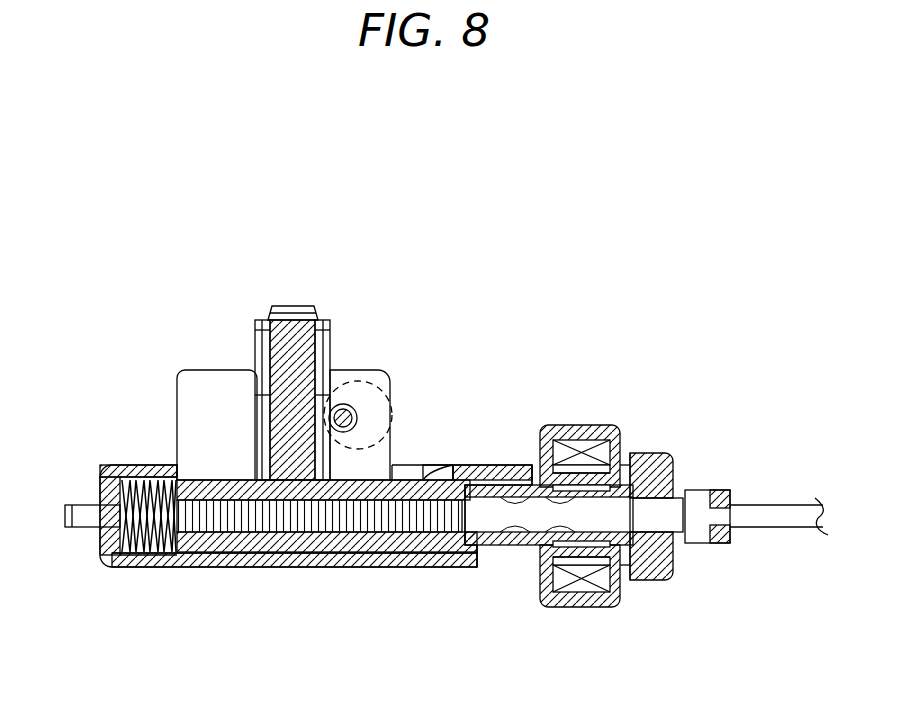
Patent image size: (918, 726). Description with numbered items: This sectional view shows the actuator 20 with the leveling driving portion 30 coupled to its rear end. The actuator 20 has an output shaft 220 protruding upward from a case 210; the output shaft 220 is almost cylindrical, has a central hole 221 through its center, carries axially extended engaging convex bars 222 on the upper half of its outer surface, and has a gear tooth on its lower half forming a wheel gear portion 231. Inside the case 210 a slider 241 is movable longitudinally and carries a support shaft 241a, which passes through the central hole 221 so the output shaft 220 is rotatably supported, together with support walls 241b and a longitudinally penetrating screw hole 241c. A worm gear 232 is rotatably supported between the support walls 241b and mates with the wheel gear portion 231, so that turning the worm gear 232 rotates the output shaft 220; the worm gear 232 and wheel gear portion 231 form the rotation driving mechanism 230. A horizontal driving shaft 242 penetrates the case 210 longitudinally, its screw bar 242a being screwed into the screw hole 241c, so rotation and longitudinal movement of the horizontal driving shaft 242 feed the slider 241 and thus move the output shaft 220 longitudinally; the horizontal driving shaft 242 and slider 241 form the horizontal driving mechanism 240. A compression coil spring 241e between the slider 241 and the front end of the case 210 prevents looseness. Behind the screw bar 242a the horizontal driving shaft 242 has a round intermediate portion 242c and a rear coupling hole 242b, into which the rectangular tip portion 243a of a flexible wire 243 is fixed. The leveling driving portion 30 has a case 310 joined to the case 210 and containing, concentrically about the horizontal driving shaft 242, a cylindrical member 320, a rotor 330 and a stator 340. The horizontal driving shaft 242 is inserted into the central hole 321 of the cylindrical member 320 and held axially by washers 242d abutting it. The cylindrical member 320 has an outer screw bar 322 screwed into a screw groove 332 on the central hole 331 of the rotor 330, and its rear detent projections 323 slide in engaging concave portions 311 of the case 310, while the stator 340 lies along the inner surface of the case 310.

The actuator 20 is at (150, 333).
The leveling driving portion 30 is at (567, 425).
The case 210 is at (137, 567).
The output shaft 220 is at (327, 335).
The central hole 221 is at (282, 330).
The engaging convex bars 222 is at (250, 330).
The rotation driving mechanism 230 is at (465, 210).
The wheel gear portion 231 is at (347, 405).
The worm gear 232 is at (362, 445).
The horizontal driving mechanism 240 is at (415, 673).
The slider 241 is at (312, 567).
The support shaft 241a is at (305, 306).
The support walls 241b is at (195, 420).
The screw hole 241c is at (238, 567).
The compression coil spring 241e is at (125, 465).
The horizontal driving shaft 242 is at (400, 567).
The screw bar 242a is at (262, 567).
The coupling hole 242b is at (740, 545).
The intermediate portion 242c is at (475, 567).
The washers 242d is at (440, 470).
The flexible wire 243 is at (775, 505).
The tip portion 243a is at (700, 545).
The case 310 is at (590, 425).
The engaging concave portions 311 is at (655, 465).
The cylindrical member 320 is at (550, 603).
The central hole 321 is at (473, 468).
The screw bar 322 is at (600, 607).
The detent projections 323 is at (640, 455).
The rotor 330 is at (632, 452).
The central hole 331 is at (650, 480).
The screw groove 332 is at (528, 470).
The stator 340 is at (565, 607).